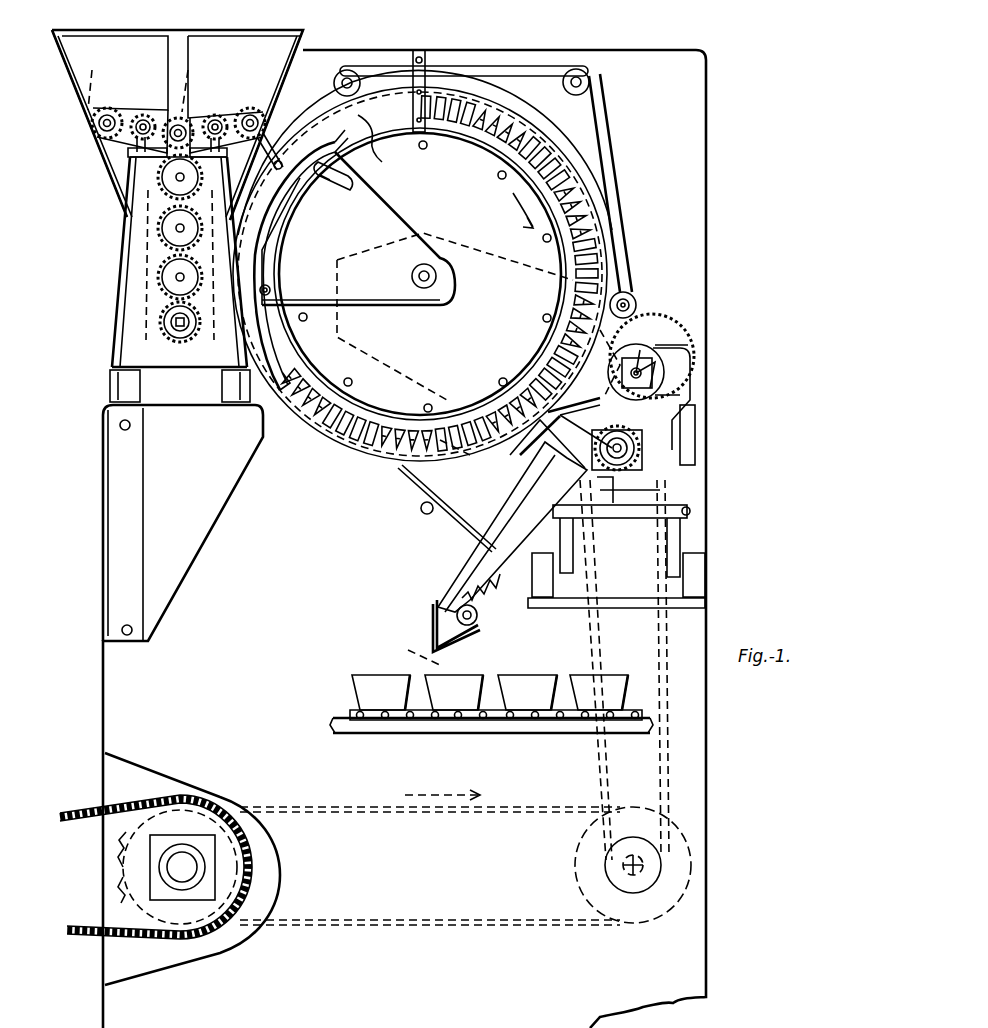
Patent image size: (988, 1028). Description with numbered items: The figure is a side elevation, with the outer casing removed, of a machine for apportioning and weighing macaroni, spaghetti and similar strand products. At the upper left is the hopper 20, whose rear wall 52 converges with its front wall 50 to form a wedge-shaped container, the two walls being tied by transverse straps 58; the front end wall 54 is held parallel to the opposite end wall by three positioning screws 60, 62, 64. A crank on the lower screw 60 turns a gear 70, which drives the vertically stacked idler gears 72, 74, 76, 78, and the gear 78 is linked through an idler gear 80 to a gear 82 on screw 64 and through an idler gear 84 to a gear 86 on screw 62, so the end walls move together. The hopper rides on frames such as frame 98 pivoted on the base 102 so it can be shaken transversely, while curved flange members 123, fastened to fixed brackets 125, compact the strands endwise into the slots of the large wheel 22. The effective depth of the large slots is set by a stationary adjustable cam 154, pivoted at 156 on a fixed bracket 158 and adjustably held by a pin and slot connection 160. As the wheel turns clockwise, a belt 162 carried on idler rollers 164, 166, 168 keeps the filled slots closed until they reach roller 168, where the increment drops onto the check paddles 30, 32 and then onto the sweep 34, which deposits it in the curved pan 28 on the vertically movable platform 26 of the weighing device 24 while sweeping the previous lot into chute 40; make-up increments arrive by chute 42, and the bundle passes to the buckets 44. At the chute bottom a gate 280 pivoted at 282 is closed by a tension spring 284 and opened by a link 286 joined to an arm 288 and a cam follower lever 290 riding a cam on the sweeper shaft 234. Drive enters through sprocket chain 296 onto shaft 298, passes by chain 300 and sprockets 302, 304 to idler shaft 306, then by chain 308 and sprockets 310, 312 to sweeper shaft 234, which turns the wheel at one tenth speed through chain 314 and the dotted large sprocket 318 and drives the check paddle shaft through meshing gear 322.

The hopper 20 is at (70, 112).
The wheel 22 is at (458, 158).
The weighing device 24 is at (692, 534).
The vertically movable platform 26 is at (690, 510).
The cylindrically curved pan 28 is at (696, 468).
The check paddle 30 is at (690, 340).
The check paddle 32 is at (632, 364).
The sweep 34 is at (660, 402).
The chute 40 is at (510, 545).
The chute 42 is at (410, 485).
The buckets 44 is at (580, 675).
The front wall 50 is at (275, 110).
The rear wall 52 is at (102, 170).
The front end wall 54 is at (220, 398).
The straps 58 is at (222, 115).
The positioning screw 60 is at (172, 332).
The positioning screw 62 is at (256, 112).
The positioning screw 64 is at (110, 110).
The gear 70 is at (162, 328).
The idler gear 72 is at (158, 285).
The idler gear 74 is at (158, 240).
The idler gear 76 is at (160, 195).
The idler gear 78 is at (197, 81).
The idler gear 80 is at (146, 114).
The gear 82 is at (87, 80).
The idler gear 84 is at (190, 120).
The gear 86 is at (270, 122).
The frame 98 is at (120, 384).
The base 102 is at (208, 520).
The curved flange member 123 is at (384, 144).
The fixed bracket 125 is at (424, 60).
The adjustable cam 154 is at (278, 220).
The pivot 156 is at (272, 288).
The fixed bracket 158 is at (372, 290).
The pin and slot connection 160 is at (346, 192).
The belt 162 is at (546, 125).
The idler roller 164 is at (350, 70).
The idler roller 166 is at (592, 76).
The idler roller 168 is at (634, 292).
The sweeper shaft 234 is at (612, 510).
The gate 280 is at (428, 658).
The pivot 282 is at (472, 624).
The tension spring 284 is at (489, 607).
The link 286 is at (527, 470).
The arm 288 is at (436, 616).
The cam follower lever 290 is at (525, 470).
The sprocket chain 296 is at (84, 806).
The shaft 298 is at (184, 860).
The sprocket chain 300 is at (320, 805).
The sprocket 302 is at (122, 808).
The sprocket 304 is at (590, 862).
The idler shaft 306 is at (633, 880).
The sprocket chain 308 is at (596, 770).
The sprocket 310 is at (640, 830).
The sprocket 312 is at (650, 445).
The sprocket chain 314 is at (475, 472).
The large sprocket 318 is at (535, 390).
The gear 322 is at (670, 330).